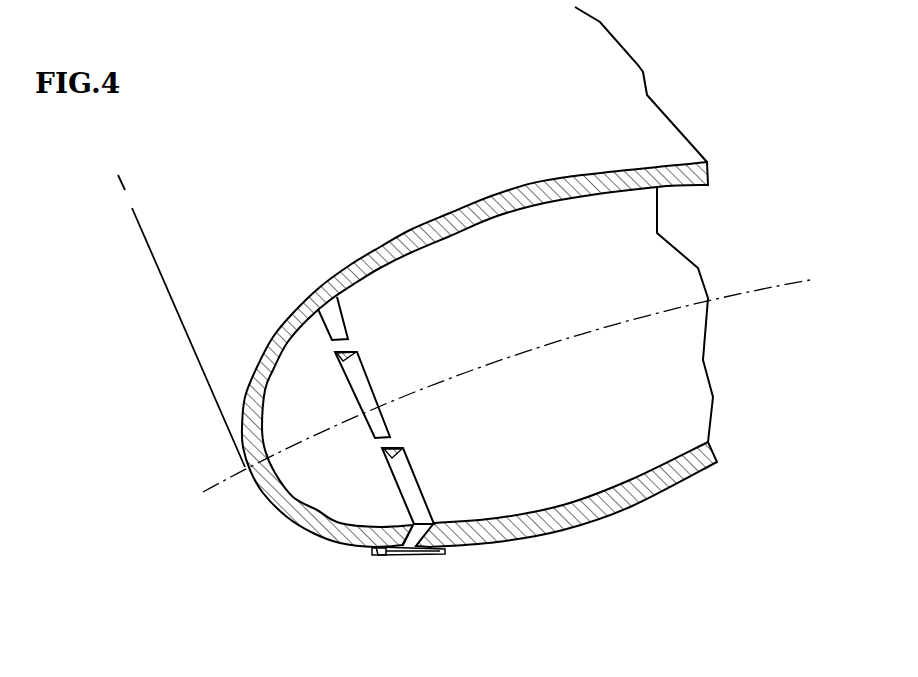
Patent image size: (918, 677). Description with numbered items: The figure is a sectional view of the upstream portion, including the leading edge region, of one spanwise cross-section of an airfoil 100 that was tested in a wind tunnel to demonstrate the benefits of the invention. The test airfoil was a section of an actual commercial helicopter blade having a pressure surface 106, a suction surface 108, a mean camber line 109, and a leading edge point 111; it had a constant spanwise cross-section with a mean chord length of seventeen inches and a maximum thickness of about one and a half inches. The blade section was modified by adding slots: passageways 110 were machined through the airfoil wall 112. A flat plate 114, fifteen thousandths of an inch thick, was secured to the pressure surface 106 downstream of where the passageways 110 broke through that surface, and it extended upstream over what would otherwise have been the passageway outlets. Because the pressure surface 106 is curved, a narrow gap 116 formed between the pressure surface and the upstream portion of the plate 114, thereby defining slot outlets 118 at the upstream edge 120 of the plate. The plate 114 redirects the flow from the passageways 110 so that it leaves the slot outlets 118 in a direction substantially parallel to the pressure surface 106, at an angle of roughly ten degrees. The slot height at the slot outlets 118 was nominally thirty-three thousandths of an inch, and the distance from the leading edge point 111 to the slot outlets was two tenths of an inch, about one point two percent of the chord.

The airfoil 100 is at (158, 325).
The pressure surface 106 is at (598, 515).
The suction surface 108 is at (447, 212).
The mean camber line 109 is at (520, 343).
The passageways 110 is at (407, 482).
The leading edge point 111 is at (245, 467).
The airfoil wall 112 is at (671, 163).
The flat plate 114 is at (442, 549).
The gap 116 is at (400, 557).
The slot outlets 118 is at (376, 548).
The upstream edge 120 is at (380, 553).